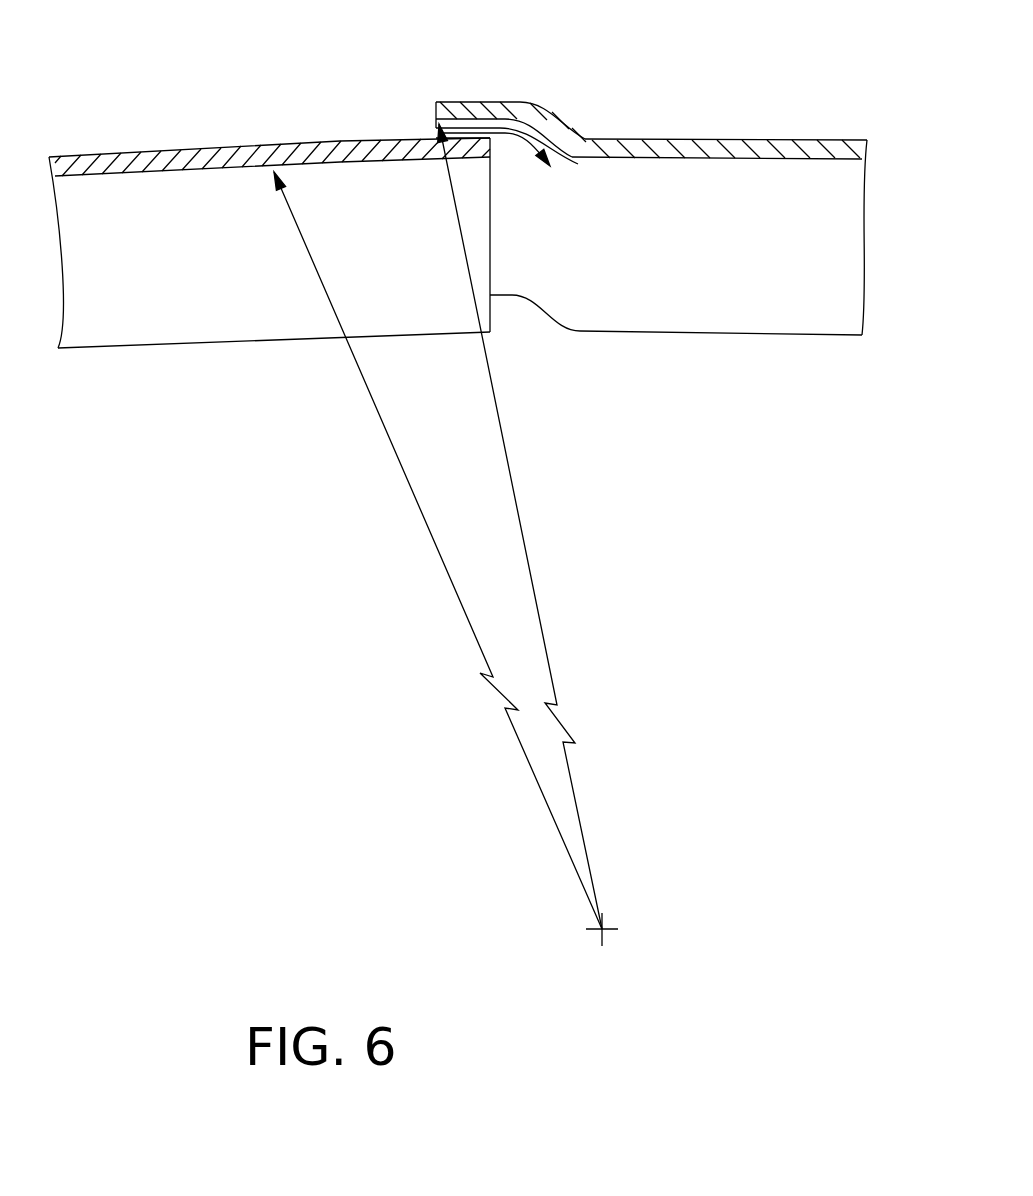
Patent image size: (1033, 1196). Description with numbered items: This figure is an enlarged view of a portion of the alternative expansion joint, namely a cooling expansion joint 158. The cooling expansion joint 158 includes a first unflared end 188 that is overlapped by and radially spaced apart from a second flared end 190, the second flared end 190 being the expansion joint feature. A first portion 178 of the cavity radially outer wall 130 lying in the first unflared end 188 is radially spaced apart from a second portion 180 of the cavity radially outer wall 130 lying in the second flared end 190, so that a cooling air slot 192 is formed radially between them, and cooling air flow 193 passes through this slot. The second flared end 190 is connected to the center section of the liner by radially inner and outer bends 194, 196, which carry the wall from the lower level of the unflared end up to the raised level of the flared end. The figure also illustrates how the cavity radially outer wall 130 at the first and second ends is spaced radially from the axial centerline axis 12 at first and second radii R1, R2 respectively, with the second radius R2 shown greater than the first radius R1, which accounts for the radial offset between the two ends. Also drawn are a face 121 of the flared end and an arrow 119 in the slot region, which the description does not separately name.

The axial centerline axis 12 is at (603, 928).
The cooling air flow 119 is at (492, 152).
The forward face of seal 121 is at (436, 108).
The cavity radially outer wall 130 is at (117, 183).
The cooling expansion joint 158 is at (539, 100).
The first portion 178 is at (457, 136).
The second portion 180 is at (500, 100).
The first unflared end 188 is at (490, 113).
The second flared end 190 is at (466, 125).
The cooling air slot 192 is at (475, 101).
The cooling air flow 193 is at (436, 128).
The radially inner bend 194 is at (567, 145).
The radially outer bend 196 is at (533, 113).
The first radius R1 is at (442, 562).
The second radius R2 is at (532, 583).